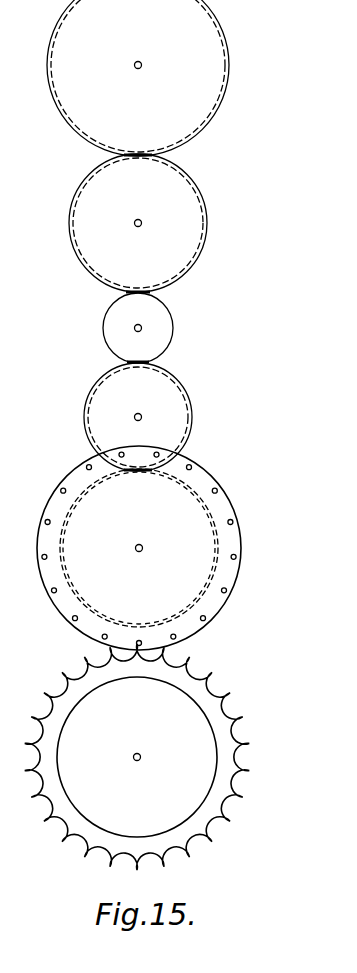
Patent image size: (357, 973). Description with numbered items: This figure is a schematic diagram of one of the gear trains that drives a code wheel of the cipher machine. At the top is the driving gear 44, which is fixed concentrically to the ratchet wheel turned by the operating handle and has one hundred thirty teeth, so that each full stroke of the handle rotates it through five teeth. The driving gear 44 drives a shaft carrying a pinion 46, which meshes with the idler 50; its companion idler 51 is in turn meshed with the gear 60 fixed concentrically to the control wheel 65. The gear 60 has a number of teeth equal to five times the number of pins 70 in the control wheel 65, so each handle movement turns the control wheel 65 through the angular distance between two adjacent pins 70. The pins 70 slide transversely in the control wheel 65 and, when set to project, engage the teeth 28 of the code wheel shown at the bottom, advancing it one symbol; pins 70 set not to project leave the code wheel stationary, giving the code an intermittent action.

The driving gear 44 is at (201, 129).
The pinion 46 is at (183, 279).
The idler 51 is at (170, 338).
The idler 50 is at (177, 395).
The gear 60 is at (192, 490).
The pin 70 is at (220, 487).
The control wheel 65 is at (225, 510).
The teeth 28 is at (230, 723).